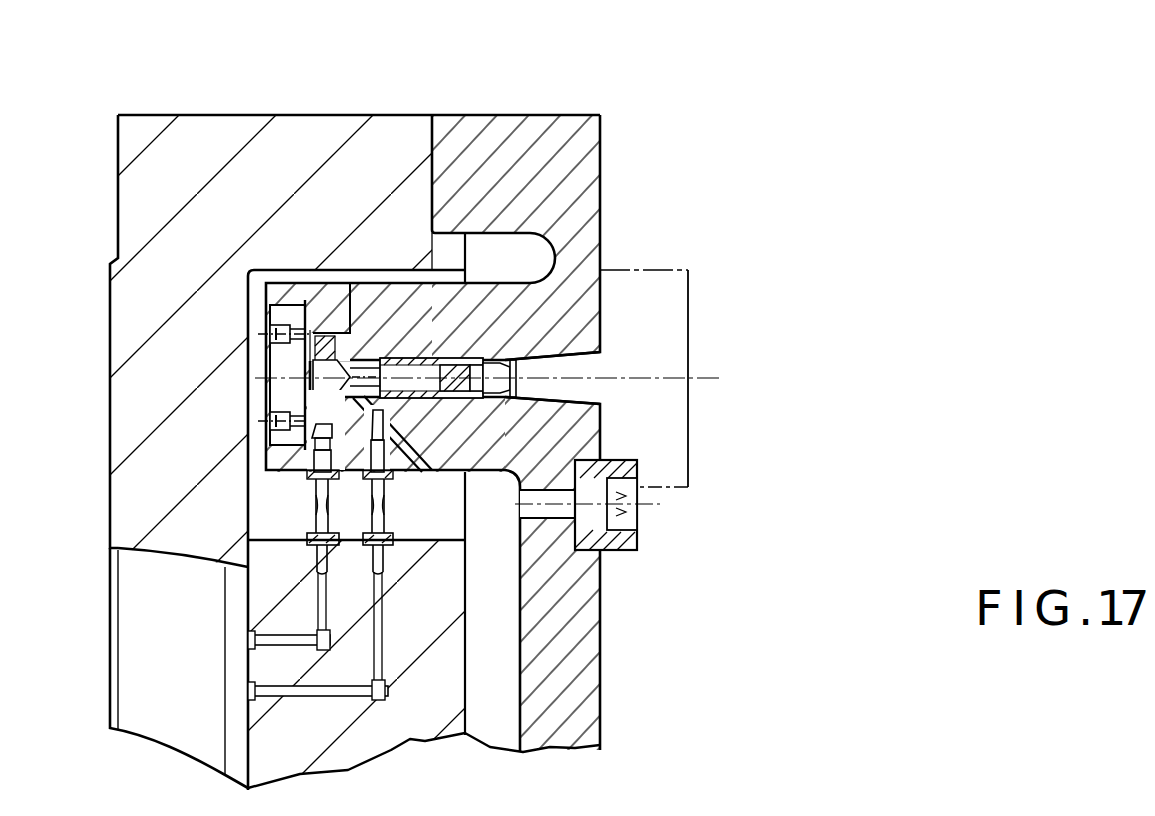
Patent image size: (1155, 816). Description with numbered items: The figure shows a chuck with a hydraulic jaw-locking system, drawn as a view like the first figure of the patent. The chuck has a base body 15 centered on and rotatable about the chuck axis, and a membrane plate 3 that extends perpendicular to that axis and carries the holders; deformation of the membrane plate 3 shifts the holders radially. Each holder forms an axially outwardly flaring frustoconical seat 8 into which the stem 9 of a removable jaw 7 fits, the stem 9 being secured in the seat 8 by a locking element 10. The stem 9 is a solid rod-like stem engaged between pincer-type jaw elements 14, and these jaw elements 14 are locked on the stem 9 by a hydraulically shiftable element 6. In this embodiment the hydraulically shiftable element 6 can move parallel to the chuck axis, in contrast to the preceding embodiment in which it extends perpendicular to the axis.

The membrane plate 3 is at (577, 607).
The hydraulically shiftable element 6 is at (347, 335).
The removable jaw 7 is at (672, 328).
The frustoconical seat 8 is at (567, 403).
The stem 9 is at (585, 333).
The locking element 10 is at (507, 353).
The pincer-type jaw element 14 is at (455, 355).
The base body 15 is at (420, 652).